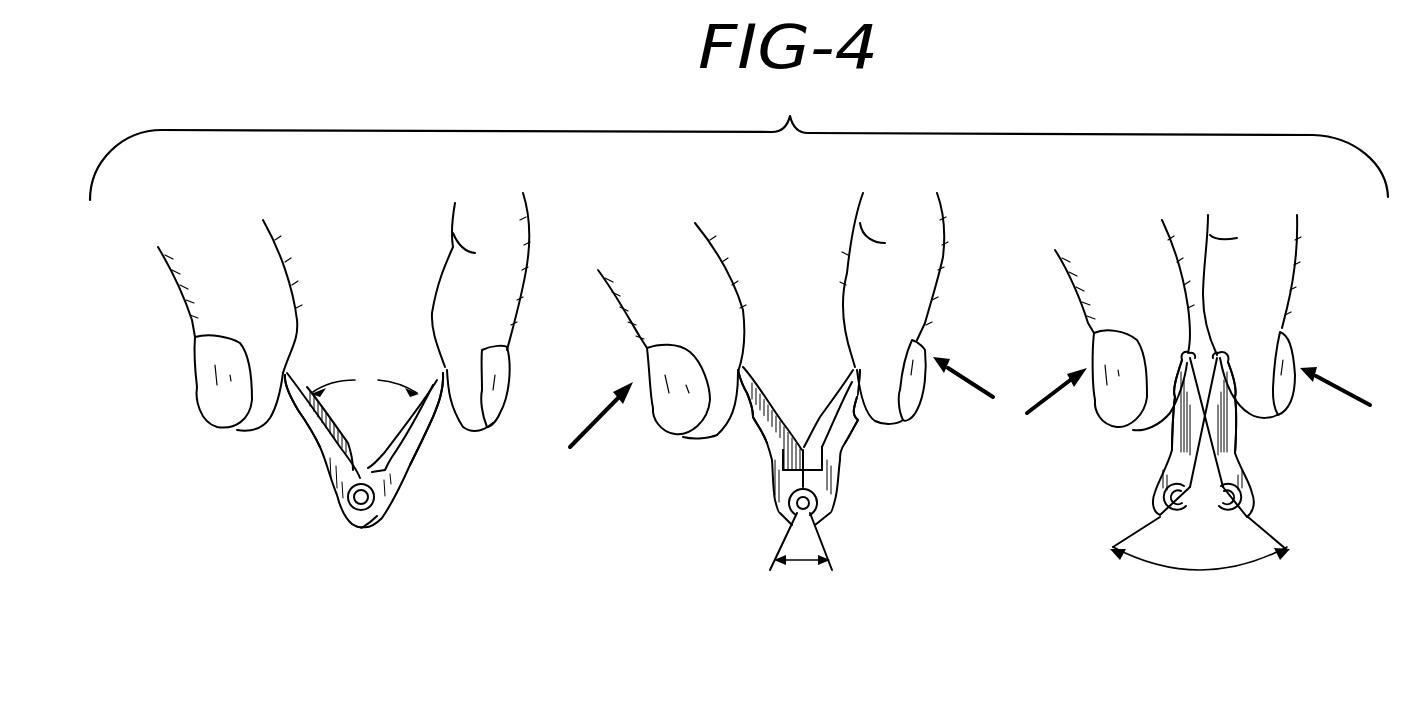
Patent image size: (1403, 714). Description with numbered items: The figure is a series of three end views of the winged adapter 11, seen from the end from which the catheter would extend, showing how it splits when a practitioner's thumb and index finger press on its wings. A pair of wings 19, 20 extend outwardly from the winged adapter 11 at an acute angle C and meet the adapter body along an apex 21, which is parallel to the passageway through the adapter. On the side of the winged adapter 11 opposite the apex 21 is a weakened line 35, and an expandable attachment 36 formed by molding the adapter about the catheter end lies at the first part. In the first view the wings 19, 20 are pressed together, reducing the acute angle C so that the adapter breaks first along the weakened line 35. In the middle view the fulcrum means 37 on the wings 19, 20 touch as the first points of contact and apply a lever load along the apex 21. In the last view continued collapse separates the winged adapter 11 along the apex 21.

The winged adapter 11 is at (320, 457).
The wing 19 is at (300, 420).
The wing 20 is at (412, 443).
The apex 21 is at (361, 483).
The weakened line 35 is at (362, 510).
The expandable attachment 36 is at (353, 523).
The fulcrum means 37 is at (808, 452).